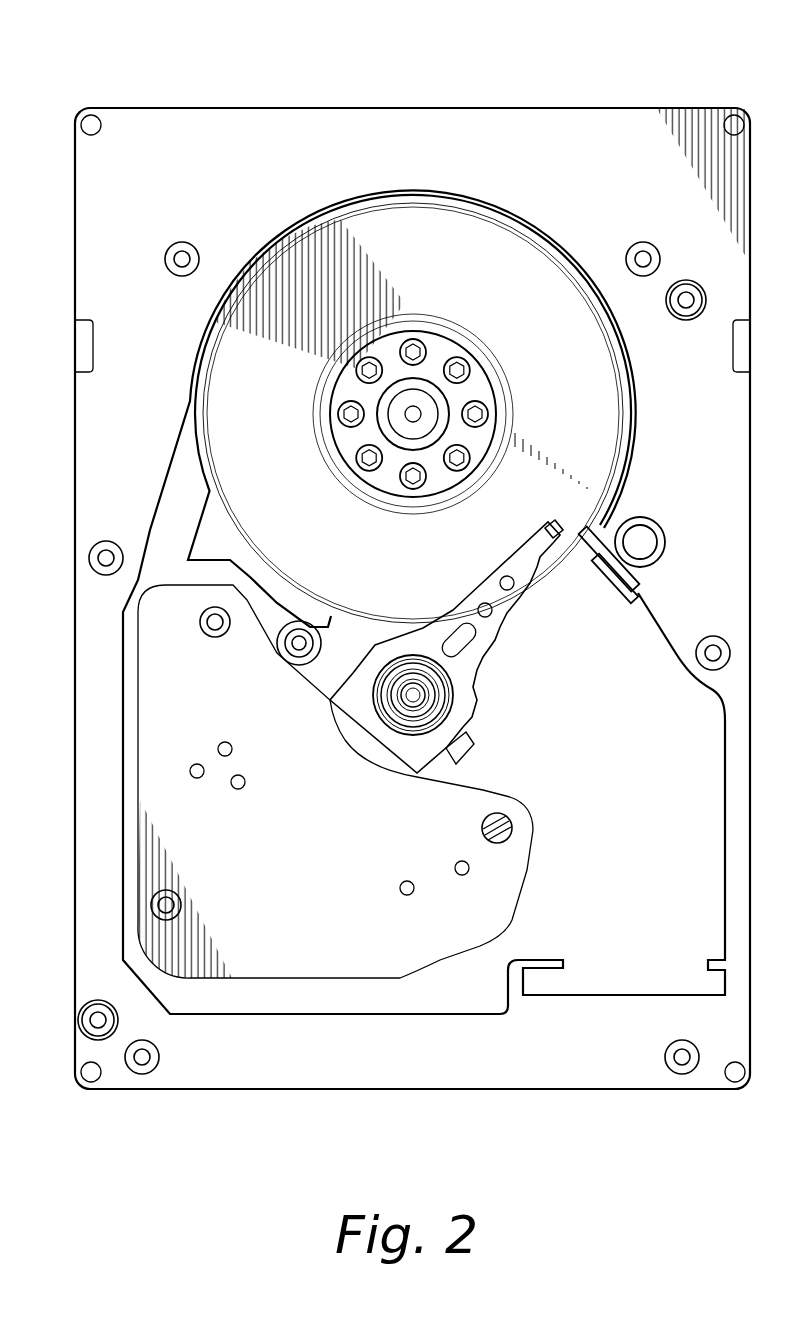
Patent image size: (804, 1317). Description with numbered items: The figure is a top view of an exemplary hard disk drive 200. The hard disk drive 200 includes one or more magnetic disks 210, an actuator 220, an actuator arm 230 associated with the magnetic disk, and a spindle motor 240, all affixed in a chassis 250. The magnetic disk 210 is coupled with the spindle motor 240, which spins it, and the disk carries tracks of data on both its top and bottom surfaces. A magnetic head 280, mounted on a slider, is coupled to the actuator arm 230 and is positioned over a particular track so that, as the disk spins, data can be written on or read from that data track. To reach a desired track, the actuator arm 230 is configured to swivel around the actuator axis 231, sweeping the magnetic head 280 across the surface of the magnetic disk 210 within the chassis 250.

The hard disk drive 200 is at (652, 38).
The magnetic disk 210 is at (500, 245).
The actuator 220 is at (510, 882).
The actuator arm 230 is at (487, 586).
The actuator axis 231 is at (418, 698).
The spindle motor 240 is at (425, 410).
The chassis 250 is at (188, 108).
The magnetic head 280 is at (549, 522).